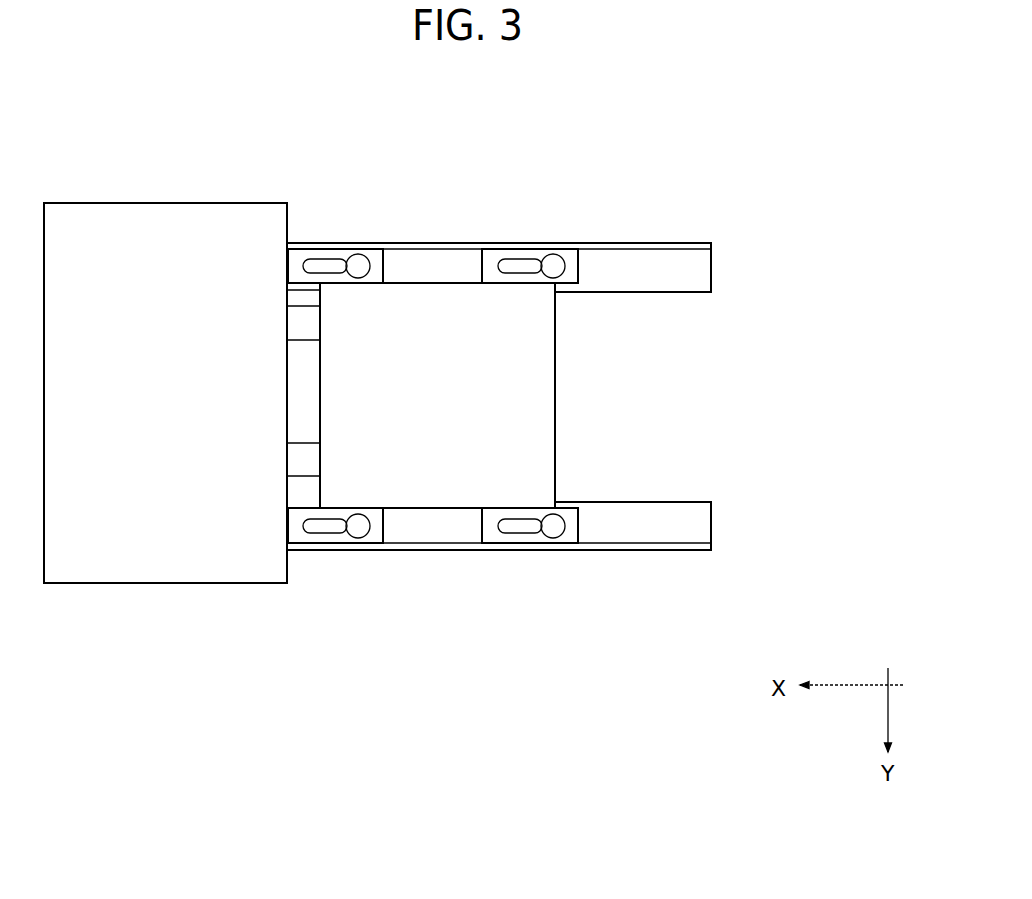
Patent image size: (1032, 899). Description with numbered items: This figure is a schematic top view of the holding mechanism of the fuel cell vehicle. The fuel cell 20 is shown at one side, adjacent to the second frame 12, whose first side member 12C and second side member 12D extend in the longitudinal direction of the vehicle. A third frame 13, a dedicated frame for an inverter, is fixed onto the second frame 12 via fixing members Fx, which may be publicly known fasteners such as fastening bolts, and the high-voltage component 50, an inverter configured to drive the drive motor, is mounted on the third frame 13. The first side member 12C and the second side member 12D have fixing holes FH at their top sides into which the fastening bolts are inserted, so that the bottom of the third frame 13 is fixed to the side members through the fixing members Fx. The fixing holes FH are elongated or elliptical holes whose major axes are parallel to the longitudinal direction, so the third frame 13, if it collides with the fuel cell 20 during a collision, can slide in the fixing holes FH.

The fuel cell 20 is at (172, 203).
The high-voltage component 50 is at (445, 337).
The second frame 12 is at (590, 445).
The first side member 12C is at (712, 267).
The second side member 12D is at (675, 530).
The third frame 13 is at (310, 247).
The fixing holes FH is at (331, 263).
The fixing members Fx is at (362, 260).